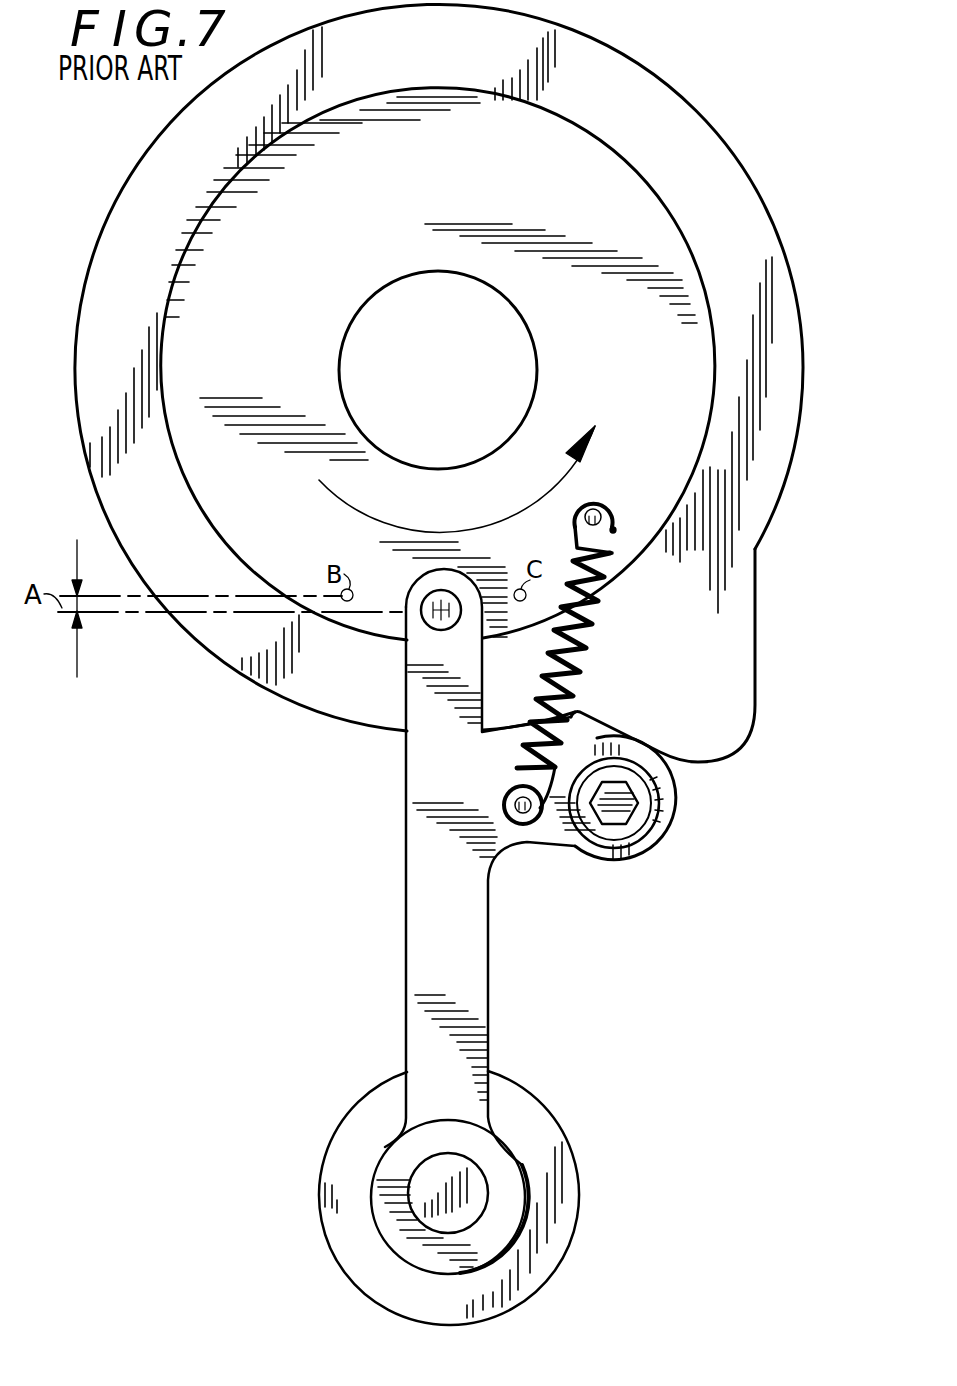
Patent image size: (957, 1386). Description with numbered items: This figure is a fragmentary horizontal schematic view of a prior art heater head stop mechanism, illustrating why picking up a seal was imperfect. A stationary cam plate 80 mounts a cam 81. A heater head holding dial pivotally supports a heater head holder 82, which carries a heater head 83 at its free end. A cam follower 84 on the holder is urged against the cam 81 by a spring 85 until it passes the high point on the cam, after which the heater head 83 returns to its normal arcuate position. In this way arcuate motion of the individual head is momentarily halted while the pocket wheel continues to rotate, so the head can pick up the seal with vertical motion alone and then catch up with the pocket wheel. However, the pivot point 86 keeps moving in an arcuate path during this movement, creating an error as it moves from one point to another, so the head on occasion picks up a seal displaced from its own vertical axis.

The stationary cam plate 80 is at (118, 197).
The cam 81 is at (777, 674).
The heater head holder 82 is at (489, 1000).
The heater head 83 is at (575, 1172).
The cam follower 84 is at (640, 862).
The spring 85 is at (602, 600).
The pivot point 86 is at (430, 622).